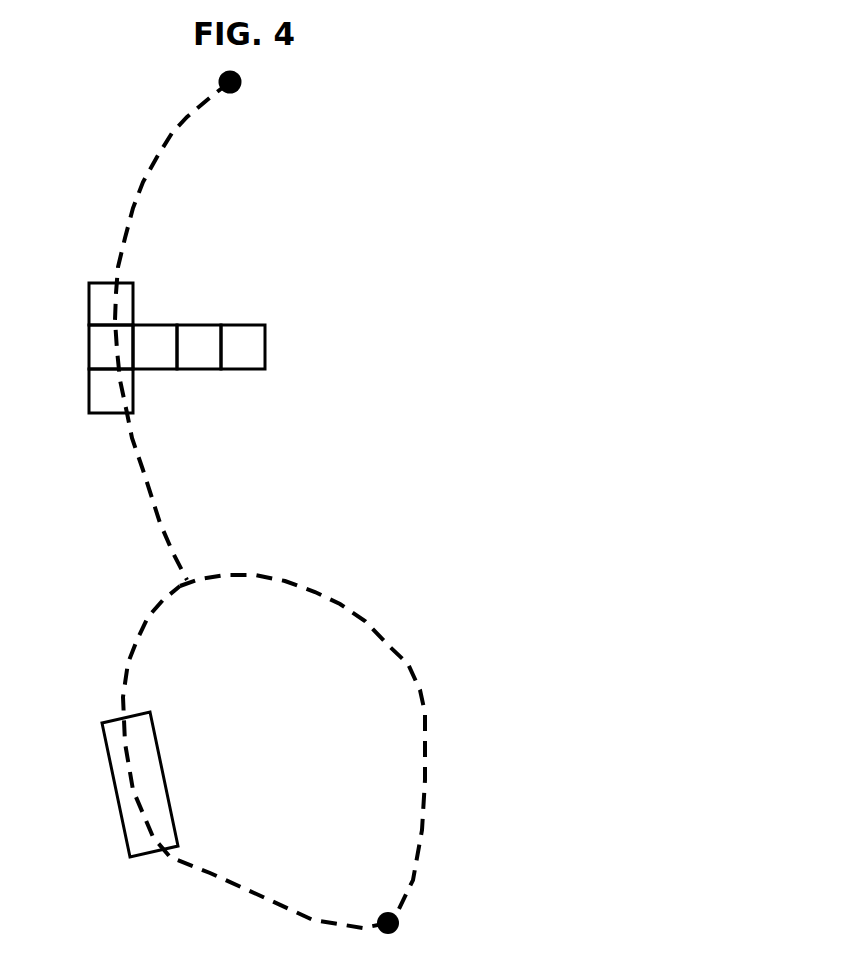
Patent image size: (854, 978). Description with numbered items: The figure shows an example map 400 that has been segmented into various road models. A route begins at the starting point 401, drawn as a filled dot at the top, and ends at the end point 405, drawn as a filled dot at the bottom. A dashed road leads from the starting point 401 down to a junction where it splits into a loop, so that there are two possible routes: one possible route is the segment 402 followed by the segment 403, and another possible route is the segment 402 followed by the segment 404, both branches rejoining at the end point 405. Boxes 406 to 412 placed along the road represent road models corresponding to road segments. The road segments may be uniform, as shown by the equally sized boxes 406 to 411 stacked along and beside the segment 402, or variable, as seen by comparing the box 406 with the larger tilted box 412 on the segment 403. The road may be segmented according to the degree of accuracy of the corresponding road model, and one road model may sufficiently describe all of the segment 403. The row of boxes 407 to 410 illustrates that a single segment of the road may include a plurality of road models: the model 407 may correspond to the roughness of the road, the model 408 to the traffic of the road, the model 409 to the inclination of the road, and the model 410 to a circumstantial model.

The map 400 is at (538, 94).
The starting point 401 is at (307, 96).
The route segment 402 is at (201, 219).
The route segment 403 is at (132, 645).
The route segment 404 is at (426, 604).
The end point 405 is at (397, 930).
The box representing a road model 406 is at (100, 307).
The road model 407 is at (100, 350).
The road model 408 is at (154, 345).
The road model 409 is at (195, 360).
The road model 410 is at (247, 345).
The box representing a road model 411 is at (100, 397).
The box representing a road model 412 is at (120, 793).